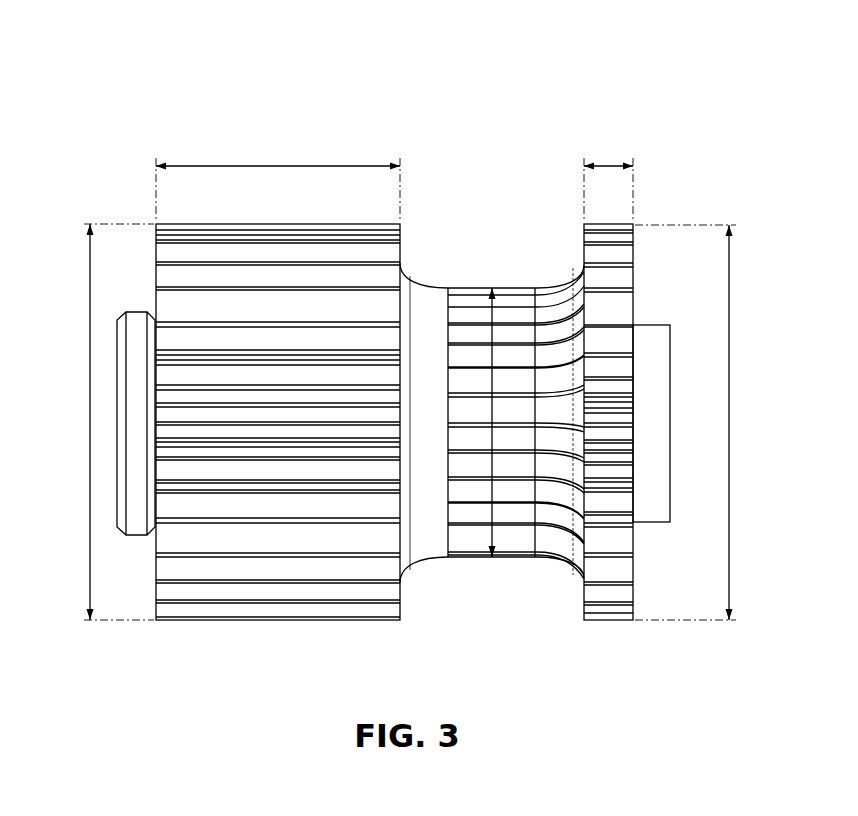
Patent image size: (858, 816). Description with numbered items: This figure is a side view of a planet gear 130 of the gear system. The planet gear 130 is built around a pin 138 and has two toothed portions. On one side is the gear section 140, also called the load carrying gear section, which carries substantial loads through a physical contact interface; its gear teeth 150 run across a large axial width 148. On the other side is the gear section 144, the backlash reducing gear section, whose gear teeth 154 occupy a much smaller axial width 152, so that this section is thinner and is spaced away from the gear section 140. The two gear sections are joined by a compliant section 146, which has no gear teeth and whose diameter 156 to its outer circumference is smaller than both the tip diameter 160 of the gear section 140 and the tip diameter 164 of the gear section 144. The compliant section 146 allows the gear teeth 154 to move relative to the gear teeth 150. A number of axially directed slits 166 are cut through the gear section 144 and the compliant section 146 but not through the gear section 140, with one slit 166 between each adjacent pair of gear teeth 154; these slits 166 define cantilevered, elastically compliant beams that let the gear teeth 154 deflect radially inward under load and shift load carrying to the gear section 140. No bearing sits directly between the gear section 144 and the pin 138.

The planet gear 130 is at (517, 83).
The pin 138 is at (657, 423).
The gear section 140 is at (259, 252).
The gear section 144 is at (610, 223).
The compliant section 146 is at (486, 577).
The axial width 148 is at (280, 164).
The gear teeth 150 is at (260, 568).
The axial width 152 is at (610, 164).
The gear teeth 154 is at (603, 568).
The diameter 156 is at (487, 357).
The tip diameter 160 is at (90, 492).
The tip diameter 164 is at (731, 497).
The slits 166 is at (517, 486).